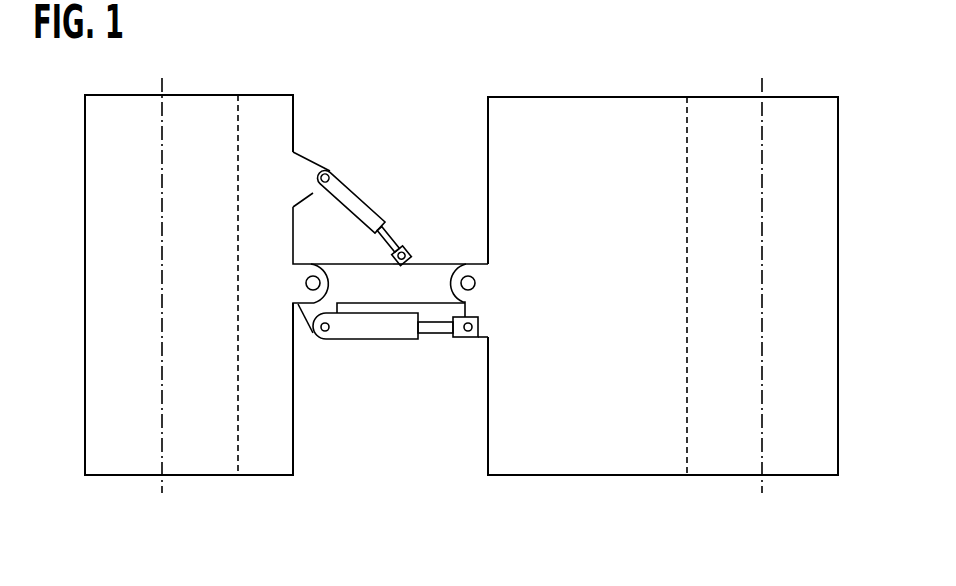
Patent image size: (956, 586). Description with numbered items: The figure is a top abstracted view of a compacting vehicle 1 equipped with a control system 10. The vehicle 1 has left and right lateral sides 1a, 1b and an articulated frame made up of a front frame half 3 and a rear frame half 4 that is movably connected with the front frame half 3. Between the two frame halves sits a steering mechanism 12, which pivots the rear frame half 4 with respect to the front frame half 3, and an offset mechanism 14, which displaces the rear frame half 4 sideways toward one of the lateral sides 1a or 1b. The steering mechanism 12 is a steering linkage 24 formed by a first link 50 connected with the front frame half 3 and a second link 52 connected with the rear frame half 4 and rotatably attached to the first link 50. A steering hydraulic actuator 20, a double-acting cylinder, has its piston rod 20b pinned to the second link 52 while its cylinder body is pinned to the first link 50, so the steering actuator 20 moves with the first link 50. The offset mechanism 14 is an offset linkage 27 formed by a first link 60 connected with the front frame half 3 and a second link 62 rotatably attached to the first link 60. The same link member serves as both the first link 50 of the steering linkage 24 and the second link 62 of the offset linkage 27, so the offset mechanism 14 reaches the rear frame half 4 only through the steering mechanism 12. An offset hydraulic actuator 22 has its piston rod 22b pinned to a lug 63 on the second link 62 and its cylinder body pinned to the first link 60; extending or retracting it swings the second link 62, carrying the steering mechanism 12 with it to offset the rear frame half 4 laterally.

The compacting vehicle 1 is at (234, 38).
The left lateral side 1a is at (222, 476).
The right lateral side 1b is at (187, 95).
The front frame half 3 is at (267, 103).
The rear frame half 4 is at (635, 115).
The control system 10 is at (353, 401).
The steering mechanism 12 is at (468, 378).
The offset mechanism 14 is at (359, 161).
The steering hydraulic actuator 20 is at (368, 353).
The piston rod of steering actuator 20b is at (437, 335).
The offset hydraulic actuator 22 is at (343, 180).
The piston rod of offset actuator 22b is at (395, 243).
The steering linkage 24 is at (492, 292).
The offset linkage 27 is at (306, 341).
The first link of steering linkage 50 is at (450, 192).
The second link of steering linkage 52 is at (473, 270).
The first link of offset linkage 60 is at (312, 274).
The second link of offset linkage 62 is at (437, 272).
The lug 63 is at (415, 265).